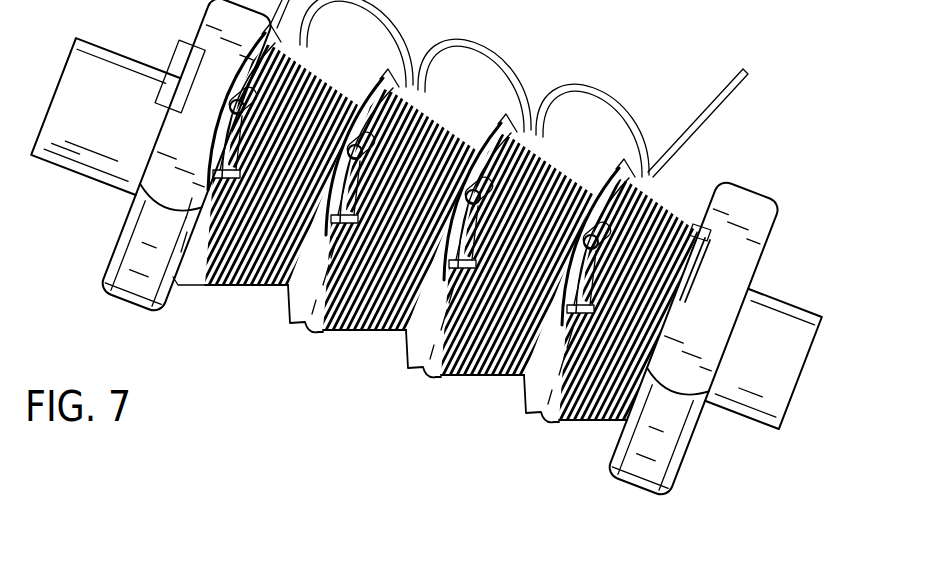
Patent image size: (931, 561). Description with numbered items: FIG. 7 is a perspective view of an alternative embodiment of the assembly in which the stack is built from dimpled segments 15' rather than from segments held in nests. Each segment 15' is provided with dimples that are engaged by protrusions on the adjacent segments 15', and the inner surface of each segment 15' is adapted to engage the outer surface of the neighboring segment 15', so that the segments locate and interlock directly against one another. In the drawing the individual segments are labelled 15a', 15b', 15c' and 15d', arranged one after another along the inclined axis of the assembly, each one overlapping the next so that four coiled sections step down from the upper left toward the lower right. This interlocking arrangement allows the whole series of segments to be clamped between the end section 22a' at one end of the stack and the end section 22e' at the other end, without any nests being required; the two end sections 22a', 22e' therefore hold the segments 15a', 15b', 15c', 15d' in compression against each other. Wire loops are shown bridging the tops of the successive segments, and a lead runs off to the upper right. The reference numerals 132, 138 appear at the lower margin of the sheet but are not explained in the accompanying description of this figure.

The end section 22a' is at (137, 163).
The end section 22e' is at (730, 352).
The first coil section 15a' is at (465, 220).
The second coil section 15b' is at (465, 240).
The third coil section 15c' is at (465, 240).
The fourth coil section 15d' is at (465, 253).
The segment 15' is at (270, 285).
The wire 132 is at (379, 556).
The loop 138 is at (426, 556).